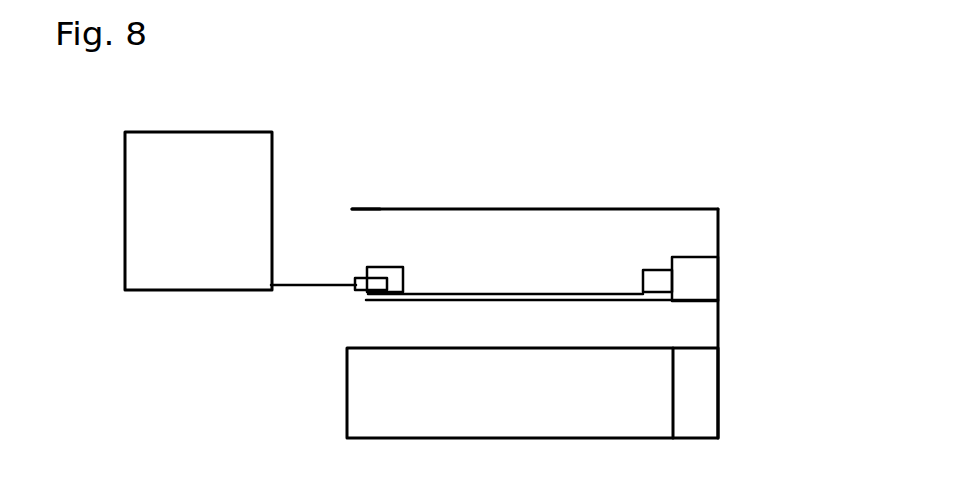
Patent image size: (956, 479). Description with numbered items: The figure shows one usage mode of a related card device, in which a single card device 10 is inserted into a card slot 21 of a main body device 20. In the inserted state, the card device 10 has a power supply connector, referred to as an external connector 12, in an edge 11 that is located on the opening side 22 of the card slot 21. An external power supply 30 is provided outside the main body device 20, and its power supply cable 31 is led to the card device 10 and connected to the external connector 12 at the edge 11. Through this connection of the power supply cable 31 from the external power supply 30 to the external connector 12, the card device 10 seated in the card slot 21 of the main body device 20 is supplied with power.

The card device 10 is at (501, 286).
The edge 11 is at (368, 300).
The external connector 12 is at (358, 277).
The main body device 20 is at (532, 272).
The card slot 21 is at (525, 213).
The opening side 22 is at (352, 208).
The external power supply 30 is at (227, 131).
The power supply cable 31 is at (300, 287).